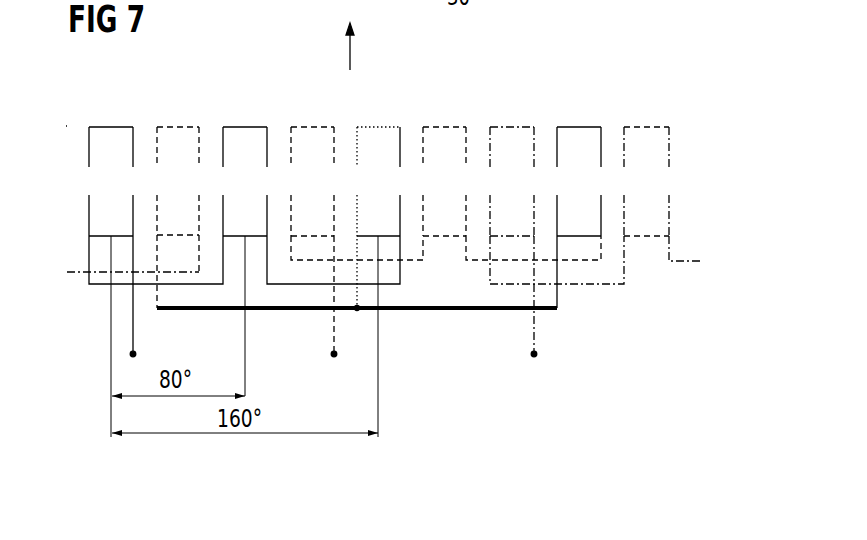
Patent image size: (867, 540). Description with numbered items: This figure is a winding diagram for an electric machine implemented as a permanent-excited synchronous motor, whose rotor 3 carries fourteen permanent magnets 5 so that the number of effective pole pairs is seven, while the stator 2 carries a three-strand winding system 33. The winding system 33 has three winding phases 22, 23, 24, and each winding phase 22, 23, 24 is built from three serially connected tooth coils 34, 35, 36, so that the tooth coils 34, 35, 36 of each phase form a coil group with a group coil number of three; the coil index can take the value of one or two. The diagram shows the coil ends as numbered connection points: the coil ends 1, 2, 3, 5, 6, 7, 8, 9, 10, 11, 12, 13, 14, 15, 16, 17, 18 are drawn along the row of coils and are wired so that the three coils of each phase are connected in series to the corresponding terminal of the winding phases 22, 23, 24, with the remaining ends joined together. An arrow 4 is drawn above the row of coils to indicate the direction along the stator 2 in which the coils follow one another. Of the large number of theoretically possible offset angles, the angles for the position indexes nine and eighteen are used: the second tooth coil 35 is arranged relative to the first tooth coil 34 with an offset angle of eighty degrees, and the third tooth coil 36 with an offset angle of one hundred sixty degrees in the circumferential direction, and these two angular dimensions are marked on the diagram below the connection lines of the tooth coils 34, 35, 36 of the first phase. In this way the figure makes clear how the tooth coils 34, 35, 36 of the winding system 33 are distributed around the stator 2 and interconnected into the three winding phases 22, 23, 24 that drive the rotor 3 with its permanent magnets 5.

The axial direction arrow 4 is at (401, 38).
The winding phase 22 is at (136, 353).
The winding phase 23 is at (331, 354).
The winding phase 24 is at (537, 353).
The three-strand winding system 33 is at (684, 122).
The first tooth coil 34 is at (110, 126).
The tooth coil 35 is at (245, 126).
The tooth coil 36 is at (178, 126).
The coil end 1 is at (223, 181).
The stator 2 is at (267, 181).
The rotor 3 is at (291, 181).
The permanent magnet 5 is at (357, 217).
The coil end 6 is at (400, 181).
The coil end 7 is at (423, 181).
The coil end 8 is at (466, 181).
The coil end 9 is at (490, 181).
The coil end 10 is at (530, 181).
The coil end 11 is at (557, 181).
The coil end 12 is at (600, 181).
The coil end 13 is at (624, 181).
The coil end 14 is at (668, 181).
The coil end 15 is at (88, 181).
The coil end 16 is at (132, 181).
The coil end 17 is at (155, 181).
The coil end 18 is at (198, 181).